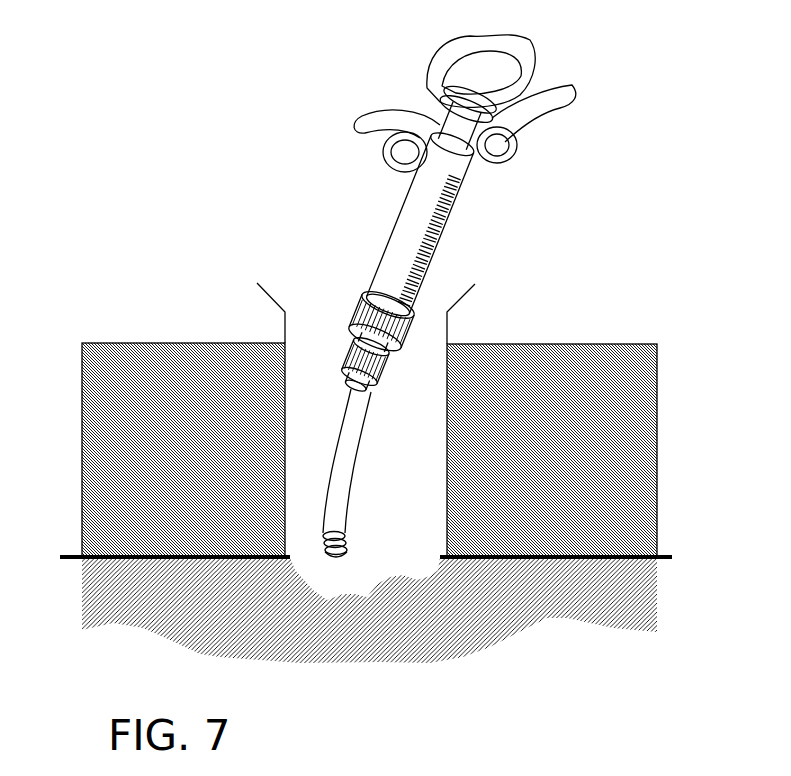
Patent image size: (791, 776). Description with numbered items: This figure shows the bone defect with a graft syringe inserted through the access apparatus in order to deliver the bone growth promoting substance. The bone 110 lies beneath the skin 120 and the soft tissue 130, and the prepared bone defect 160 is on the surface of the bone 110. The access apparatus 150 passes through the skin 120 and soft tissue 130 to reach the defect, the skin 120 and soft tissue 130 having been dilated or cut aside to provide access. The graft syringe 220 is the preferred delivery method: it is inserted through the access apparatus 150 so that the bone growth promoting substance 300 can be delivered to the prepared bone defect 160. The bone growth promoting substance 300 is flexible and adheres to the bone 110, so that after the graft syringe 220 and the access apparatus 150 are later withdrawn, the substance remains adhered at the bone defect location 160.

The bone 110 is at (657, 503).
The skin 120 is at (203, 343).
The soft tissue 130 is at (658, 453).
The access apparatus 150 is at (447, 330).
The prepared bone defect 160 is at (375, 596).
The graft syringe 220 is at (458, 223).
The bone growth promoting substance 300 is at (353, 398).